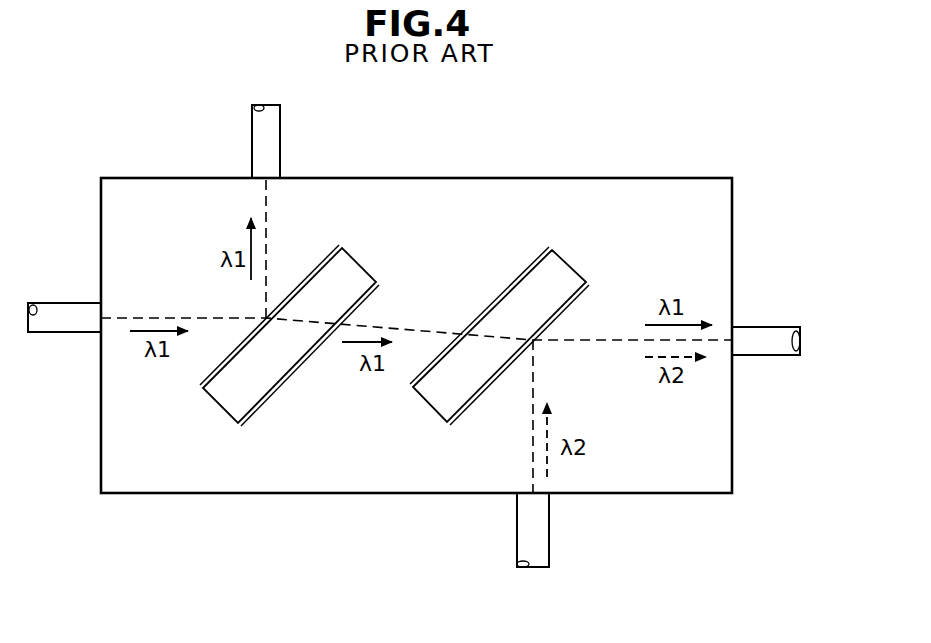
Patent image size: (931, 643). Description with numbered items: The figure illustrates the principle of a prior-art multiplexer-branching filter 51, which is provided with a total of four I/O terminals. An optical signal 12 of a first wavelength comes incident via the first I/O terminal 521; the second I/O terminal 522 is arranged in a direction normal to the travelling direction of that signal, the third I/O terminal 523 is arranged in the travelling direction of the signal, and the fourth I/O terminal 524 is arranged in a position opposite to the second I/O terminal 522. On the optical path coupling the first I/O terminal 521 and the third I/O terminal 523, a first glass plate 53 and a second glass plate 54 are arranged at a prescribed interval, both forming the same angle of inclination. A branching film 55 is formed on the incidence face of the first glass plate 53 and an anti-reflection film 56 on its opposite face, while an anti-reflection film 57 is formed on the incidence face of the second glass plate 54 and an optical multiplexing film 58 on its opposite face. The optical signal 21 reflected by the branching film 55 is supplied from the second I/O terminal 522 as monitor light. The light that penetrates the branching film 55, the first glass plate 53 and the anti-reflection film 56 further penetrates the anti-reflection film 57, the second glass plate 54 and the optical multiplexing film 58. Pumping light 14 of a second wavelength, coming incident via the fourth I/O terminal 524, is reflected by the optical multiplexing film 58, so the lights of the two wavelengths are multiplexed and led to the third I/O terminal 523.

The multiplexer-branching filter 51 is at (102, 470).
The first I/O terminal 521 is at (88, 328).
The second I/O terminal 522 is at (263, 138).
The third I/O terminal 523 is at (808, 303).
The fourth I/O terminal 524 is at (537, 552).
The first glass plate 53 is at (348, 262).
The second glass plate 54 is at (565, 268).
The branching film 55 is at (228, 350).
The anti-reflection film 56 is at (258, 407).
The anti-reflection film 57 is at (524, 270).
The optical multiplexing film 58 is at (468, 407).
The optical signal 12 is at (126, 317).
The optical signal reflected by the branching film 21 is at (267, 262).
The pumping light 14 is at (532, 383).